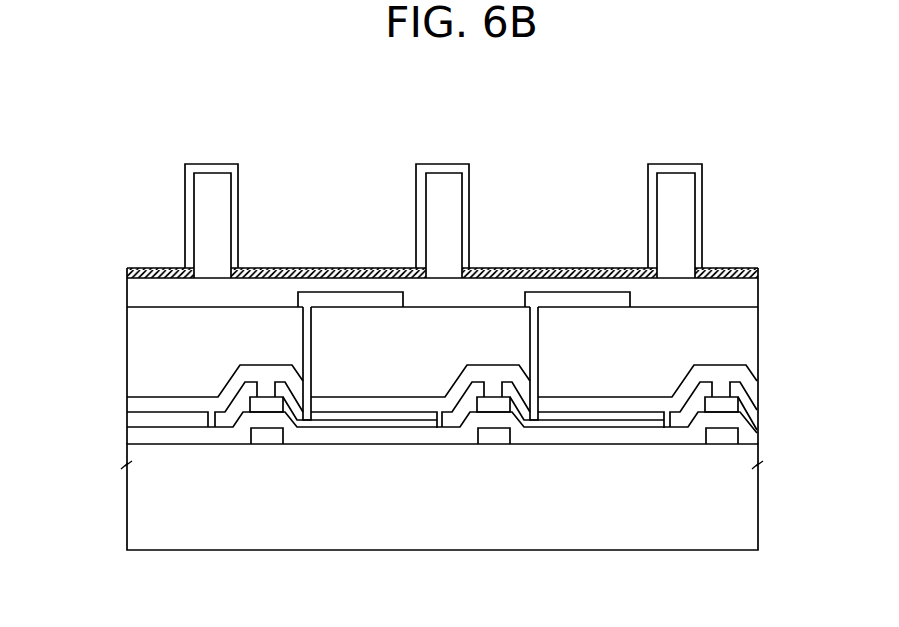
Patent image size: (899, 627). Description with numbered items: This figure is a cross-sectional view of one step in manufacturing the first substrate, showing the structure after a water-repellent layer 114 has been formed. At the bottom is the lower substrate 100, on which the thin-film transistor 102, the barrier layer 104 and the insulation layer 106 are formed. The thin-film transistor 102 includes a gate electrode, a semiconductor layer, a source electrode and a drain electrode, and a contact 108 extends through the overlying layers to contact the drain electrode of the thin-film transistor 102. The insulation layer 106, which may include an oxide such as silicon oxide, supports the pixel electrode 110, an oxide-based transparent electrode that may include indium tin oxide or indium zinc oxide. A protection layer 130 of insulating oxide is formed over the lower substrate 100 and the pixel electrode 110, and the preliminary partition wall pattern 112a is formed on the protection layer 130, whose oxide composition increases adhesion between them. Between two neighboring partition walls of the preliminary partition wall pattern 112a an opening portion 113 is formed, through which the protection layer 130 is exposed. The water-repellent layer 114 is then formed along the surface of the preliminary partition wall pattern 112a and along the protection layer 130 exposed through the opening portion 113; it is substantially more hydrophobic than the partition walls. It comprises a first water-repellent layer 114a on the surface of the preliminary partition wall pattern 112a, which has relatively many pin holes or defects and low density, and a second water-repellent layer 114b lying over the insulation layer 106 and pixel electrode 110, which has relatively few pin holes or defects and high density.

The lower substrate 100 is at (753, 498).
The thin-film transistor 102 is at (266, 446).
The barrier layer 104 is at (753, 387).
The insulation layer 106 is at (753, 347).
The contact 108 is at (303, 344).
The pixel electrode 110 is at (608, 306).
The protection layer 130 is at (753, 295).
The preliminary partition wall pattern 112a is at (677, 216).
The opening portion 113 is at (296, 207).
The water-repellent layer 114 is at (386, 221).
The first water-repellent layer 114a is at (198, 229).
The second water-repellent layer 114b is at (155, 268).